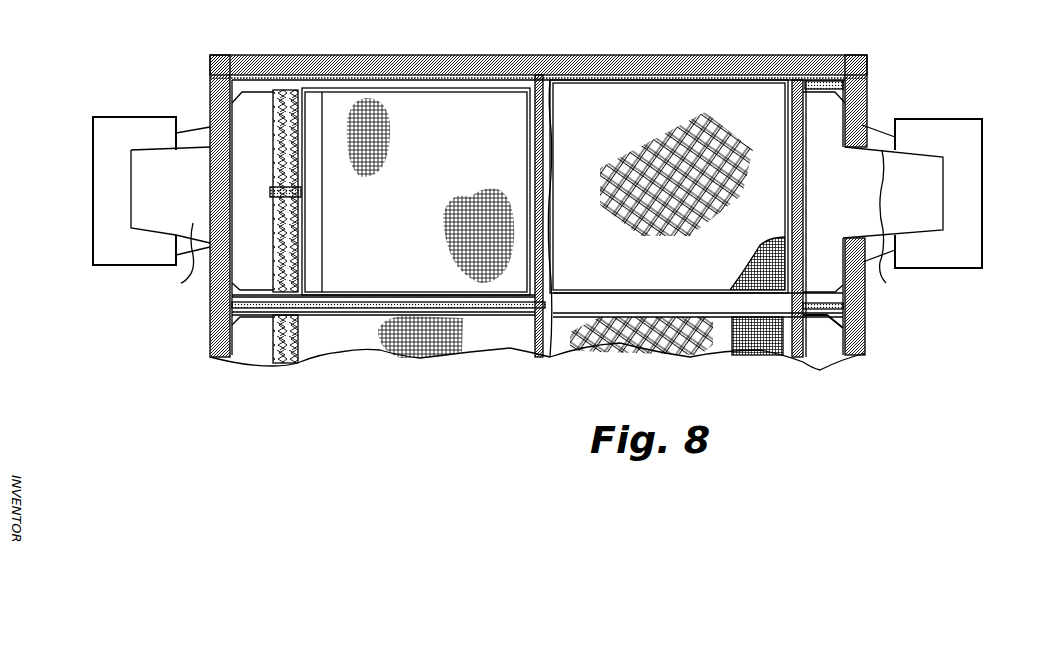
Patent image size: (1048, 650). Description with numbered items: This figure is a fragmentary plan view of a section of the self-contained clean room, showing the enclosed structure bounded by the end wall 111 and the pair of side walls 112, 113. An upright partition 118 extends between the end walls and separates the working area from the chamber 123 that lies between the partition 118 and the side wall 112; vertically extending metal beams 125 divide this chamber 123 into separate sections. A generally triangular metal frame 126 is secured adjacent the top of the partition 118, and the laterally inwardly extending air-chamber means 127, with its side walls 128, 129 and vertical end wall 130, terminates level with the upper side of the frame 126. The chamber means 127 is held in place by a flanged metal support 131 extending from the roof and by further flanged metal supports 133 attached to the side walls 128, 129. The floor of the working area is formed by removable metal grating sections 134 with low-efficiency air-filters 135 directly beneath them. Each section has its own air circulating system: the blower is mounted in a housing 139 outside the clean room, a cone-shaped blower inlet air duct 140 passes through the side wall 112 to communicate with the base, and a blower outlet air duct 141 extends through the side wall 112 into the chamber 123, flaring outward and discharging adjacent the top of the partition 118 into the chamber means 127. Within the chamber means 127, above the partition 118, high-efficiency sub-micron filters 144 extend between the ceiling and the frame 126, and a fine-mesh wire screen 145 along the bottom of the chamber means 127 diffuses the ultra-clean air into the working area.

The end wall 111 is at (574, 56).
The side wall 112 is at (868, 92).
The side wall 113 is at (210, 338).
The partition 118 is at (793, 125).
The chamber 123 is at (840, 318).
The metal beam 125 is at (827, 323).
The metal frame 126 is at (325, 240).
The air-chamber means 127 is at (518, 145).
The side wall of air-chamber means 128 is at (388, 96).
The side wall of air-chamber means 129 is at (375, 295).
The end wall of air-chamber means 130 is at (525, 173).
The flanged metal support 131 is at (553, 82).
The flanged metal support 133 is at (418, 300).
The metal grating section 134 is at (648, 267).
The air-filter 135 is at (767, 262).
The housing 139 is at (93, 137).
The blower inlet air duct 140 is at (192, 134).
The blower outlet air duct 141 is at (532, 223).
The high-efficiency sub-micron filter 144 is at (297, 222).
The fine-mesh wire screen 145 is at (434, 187).